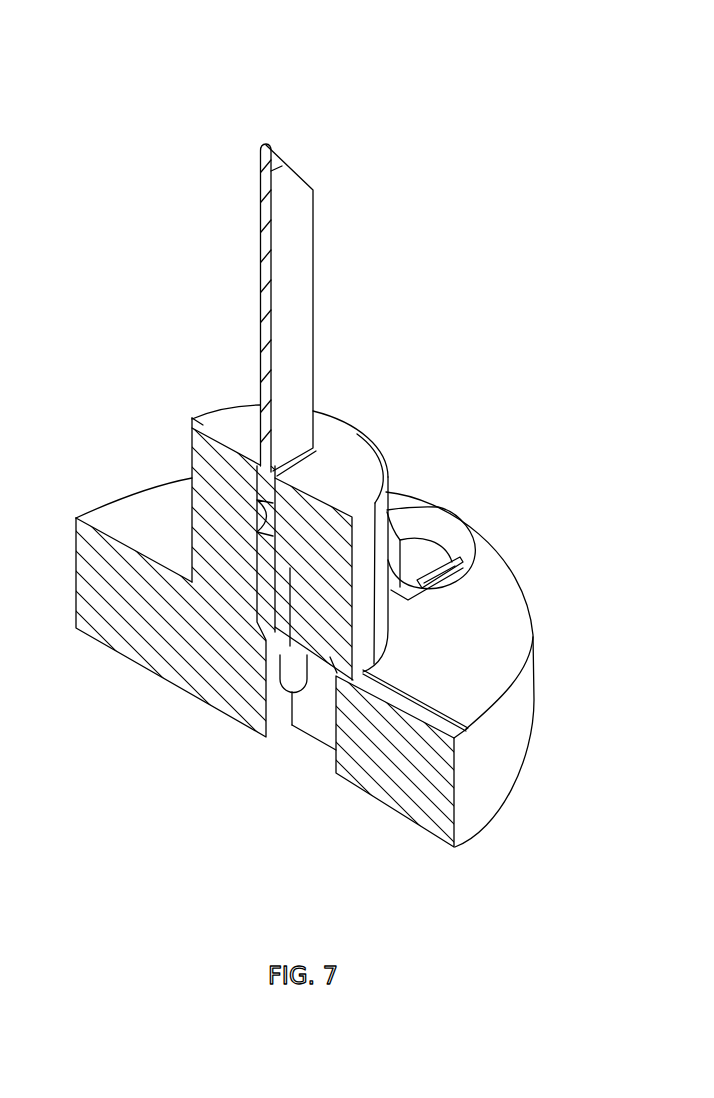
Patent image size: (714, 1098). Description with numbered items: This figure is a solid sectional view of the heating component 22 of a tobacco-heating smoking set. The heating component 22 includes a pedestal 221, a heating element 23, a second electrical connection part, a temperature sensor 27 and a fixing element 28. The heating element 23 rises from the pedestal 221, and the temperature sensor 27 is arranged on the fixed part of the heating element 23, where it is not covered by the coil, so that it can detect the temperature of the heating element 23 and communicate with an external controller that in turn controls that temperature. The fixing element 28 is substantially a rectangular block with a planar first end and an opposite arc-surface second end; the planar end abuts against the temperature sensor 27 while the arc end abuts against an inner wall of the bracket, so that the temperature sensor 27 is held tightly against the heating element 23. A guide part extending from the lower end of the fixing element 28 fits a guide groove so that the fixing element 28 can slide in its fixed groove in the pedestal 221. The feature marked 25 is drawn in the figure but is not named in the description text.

The heating component 22 is at (75, 63).
The pedestal 221 is at (506, 652).
The heating element 23 is at (300, 326).
The slot 25 is at (452, 555).
The temperature sensor 27 is at (286, 649).
The fixing element 28 is at (343, 655).